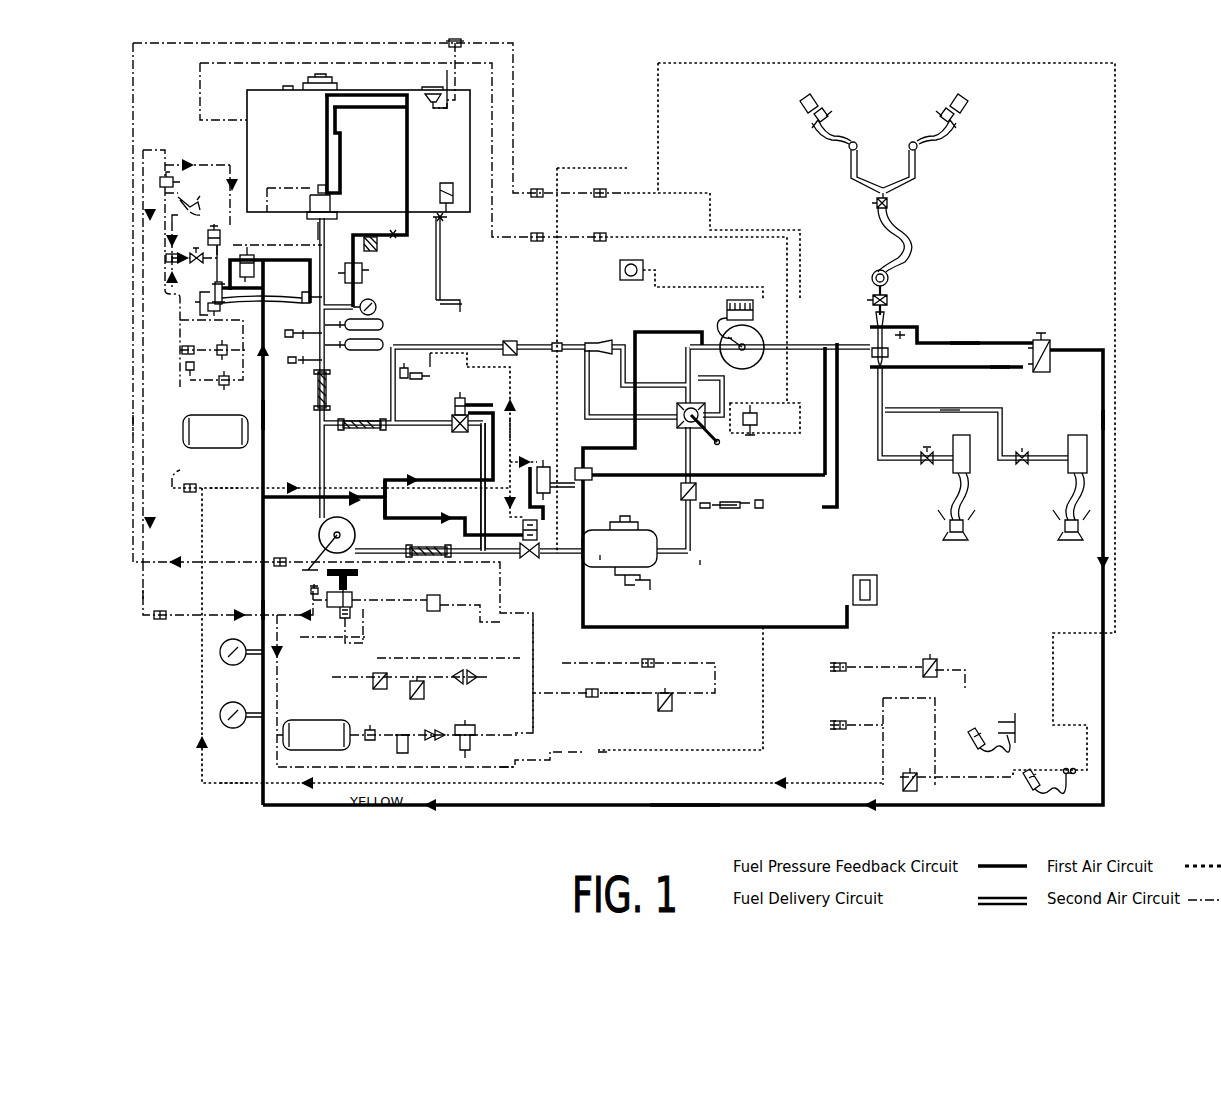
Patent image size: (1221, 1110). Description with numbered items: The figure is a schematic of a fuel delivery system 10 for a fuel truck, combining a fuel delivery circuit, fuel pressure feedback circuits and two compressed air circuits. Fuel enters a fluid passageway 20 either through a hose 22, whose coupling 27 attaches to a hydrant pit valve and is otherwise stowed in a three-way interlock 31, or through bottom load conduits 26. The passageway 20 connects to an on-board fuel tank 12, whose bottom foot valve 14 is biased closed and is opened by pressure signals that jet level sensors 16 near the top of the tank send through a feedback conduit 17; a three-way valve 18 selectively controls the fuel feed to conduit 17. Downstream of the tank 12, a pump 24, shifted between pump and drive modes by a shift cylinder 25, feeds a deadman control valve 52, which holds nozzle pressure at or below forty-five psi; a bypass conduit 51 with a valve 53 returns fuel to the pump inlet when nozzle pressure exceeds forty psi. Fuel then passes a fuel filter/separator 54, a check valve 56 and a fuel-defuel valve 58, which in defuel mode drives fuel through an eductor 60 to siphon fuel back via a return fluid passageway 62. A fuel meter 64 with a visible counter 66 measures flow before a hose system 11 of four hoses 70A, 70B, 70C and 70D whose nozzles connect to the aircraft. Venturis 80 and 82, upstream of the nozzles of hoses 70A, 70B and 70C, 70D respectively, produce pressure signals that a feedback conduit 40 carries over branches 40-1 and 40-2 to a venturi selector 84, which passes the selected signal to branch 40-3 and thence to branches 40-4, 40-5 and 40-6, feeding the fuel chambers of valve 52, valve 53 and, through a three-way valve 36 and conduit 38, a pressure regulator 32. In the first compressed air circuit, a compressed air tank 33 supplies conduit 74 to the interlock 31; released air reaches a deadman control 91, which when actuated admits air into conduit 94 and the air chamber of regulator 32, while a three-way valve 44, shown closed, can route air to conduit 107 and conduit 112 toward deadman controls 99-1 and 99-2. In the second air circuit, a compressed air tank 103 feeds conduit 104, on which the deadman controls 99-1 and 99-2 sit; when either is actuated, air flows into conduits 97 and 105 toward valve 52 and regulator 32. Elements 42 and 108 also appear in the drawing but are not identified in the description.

The fuel delivery system 10 is at (590, 77).
The hose system 11 is at (878, 405).
The on-board fuel tank 12 is at (456, 146).
The foot valve 14 is at (318, 208).
The jet level sensors 16 is at (342, 110).
The feedback conduit 17 is at (406, 172).
The three-way valve 18 is at (370, 270).
The fluid passageway 20 is at (318, 228).
The hose 22 is at (277, 301).
The pump 24 is at (356, 538).
The shift cylinder 25 is at (355, 592).
The bottom load conduits 26 is at (293, 385).
The coupling 27 is at (198, 308).
The three-way interlock 31 is at (208, 323).
The pressure regulator 32 is at (220, 306).
The compressed air tank 33 is at (230, 443).
The three-way valve 36 is at (255, 258).
The conduit 38 is at (226, 293).
The fuel pressure feedback conduit 40 is at (708, 805).
The branch of feedback conduit 40-1 is at (968, 352).
The branch of feedback conduit 40-2 is at (993, 370).
The branch of feedback conduit 40-3 is at (263, 592).
The branch of feedback conduit 40-4 is at (413, 499).
The branch of feedback conduit 40-5 is at (505, 440).
The branch of feedback conduit 40-6 is at (263, 422).
The nozzle 42 is at (222, 232).
The three-way valve 44 is at (180, 184).
The bypass conduit 51 is at (478, 505).
The deadman control valve 52 is at (527, 560).
The valve 53 is at (455, 435).
The fuel filter/separator 54 is at (629, 559).
The check valve 56 is at (698, 492).
The fuel-defuel valve 58 is at (678, 430).
The eductor 60 is at (572, 345).
The return fluid passageway 62 is at (490, 345).
The fuel meter 64 is at (742, 370).
The visible counter 66 is at (753, 312).
The hose 70A is at (860, 170).
The hose 70B is at (918, 170).
The hose 70C is at (900, 460).
The hose 70D is at (942, 408).
The conduit 74 is at (238, 396).
The venturi 80 is at (875, 328).
The venturi 82 is at (876, 367).
The venturi selector 84 is at (1042, 338).
The deadman control 91 is at (178, 200).
The conduit 94 is at (222, 270).
The conduit 97 is at (178, 478).
The deadman control 99-1 is at (977, 733).
The deadman control 99-2 is at (1030, 790).
The compressed air tank 103 is at (333, 746).
The conduit 104 is at (232, 786).
The conduit 105 is at (226, 490).
The conduit 107 is at (143, 598).
The second air circuit line 108 is at (133, 425).
The conduit 112 is at (277, 690).